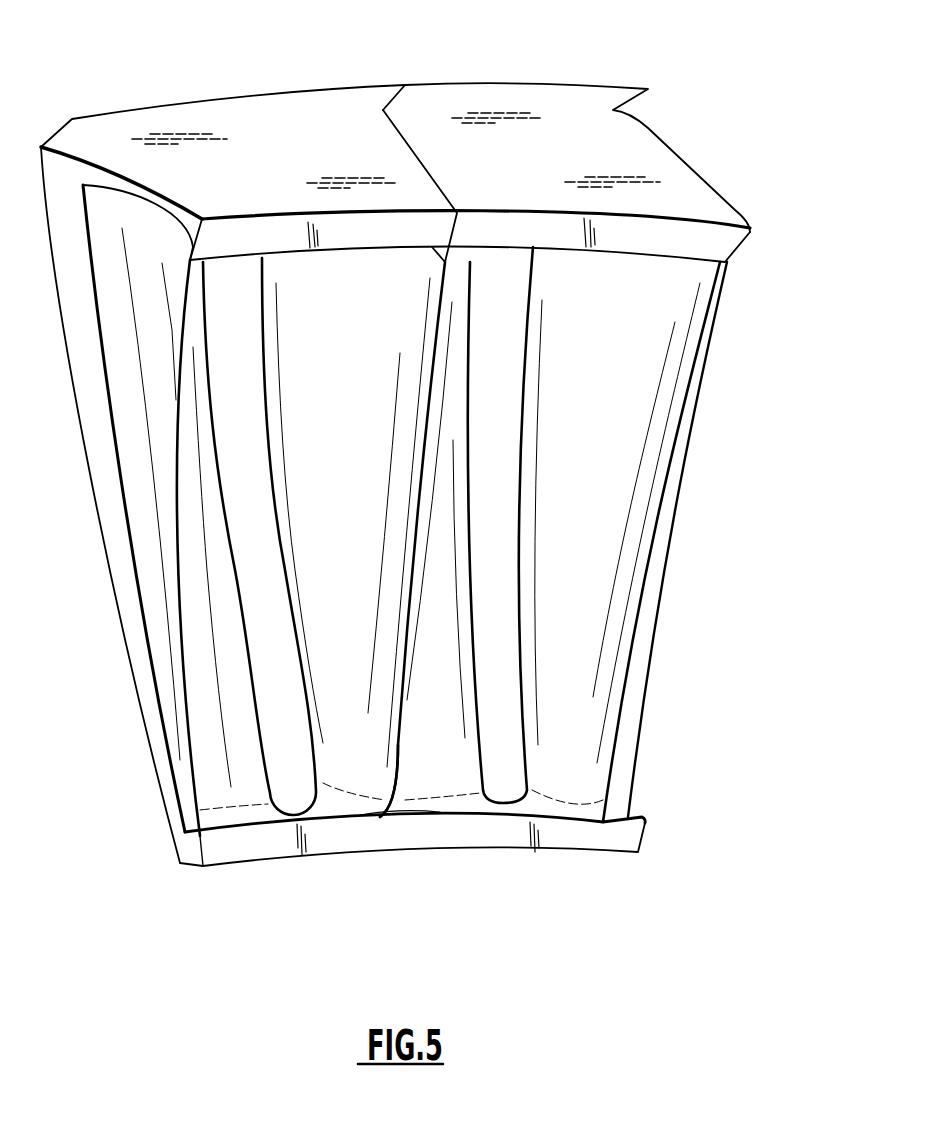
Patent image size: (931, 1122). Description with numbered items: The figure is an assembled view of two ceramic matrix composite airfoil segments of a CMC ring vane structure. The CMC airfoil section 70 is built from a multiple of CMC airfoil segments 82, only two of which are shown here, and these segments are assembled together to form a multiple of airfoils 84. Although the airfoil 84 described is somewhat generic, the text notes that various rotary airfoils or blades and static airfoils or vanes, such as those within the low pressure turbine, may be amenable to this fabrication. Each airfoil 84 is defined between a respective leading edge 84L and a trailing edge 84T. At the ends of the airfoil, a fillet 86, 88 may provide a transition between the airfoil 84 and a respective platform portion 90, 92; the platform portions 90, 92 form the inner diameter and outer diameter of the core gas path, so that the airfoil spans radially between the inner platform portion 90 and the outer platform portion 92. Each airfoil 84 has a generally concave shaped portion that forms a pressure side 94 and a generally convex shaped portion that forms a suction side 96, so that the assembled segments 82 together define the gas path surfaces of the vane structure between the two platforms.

The CMC airfoil section 70 is at (764, 633).
The CMC airfoil segment 82 is at (121, 72).
The airfoil 84 is at (460, 754).
The trailing edge 84T is at (282, 533).
The leading edge 84L is at (407, 590).
The fillet 86 is at (363, 800).
The fillet 88 is at (423, 260).
The platform portion 90 is at (625, 838).
The platform portion 92 is at (720, 242).
The pressure side 94 is at (443, 677).
The suction side 96 is at (355, 684).